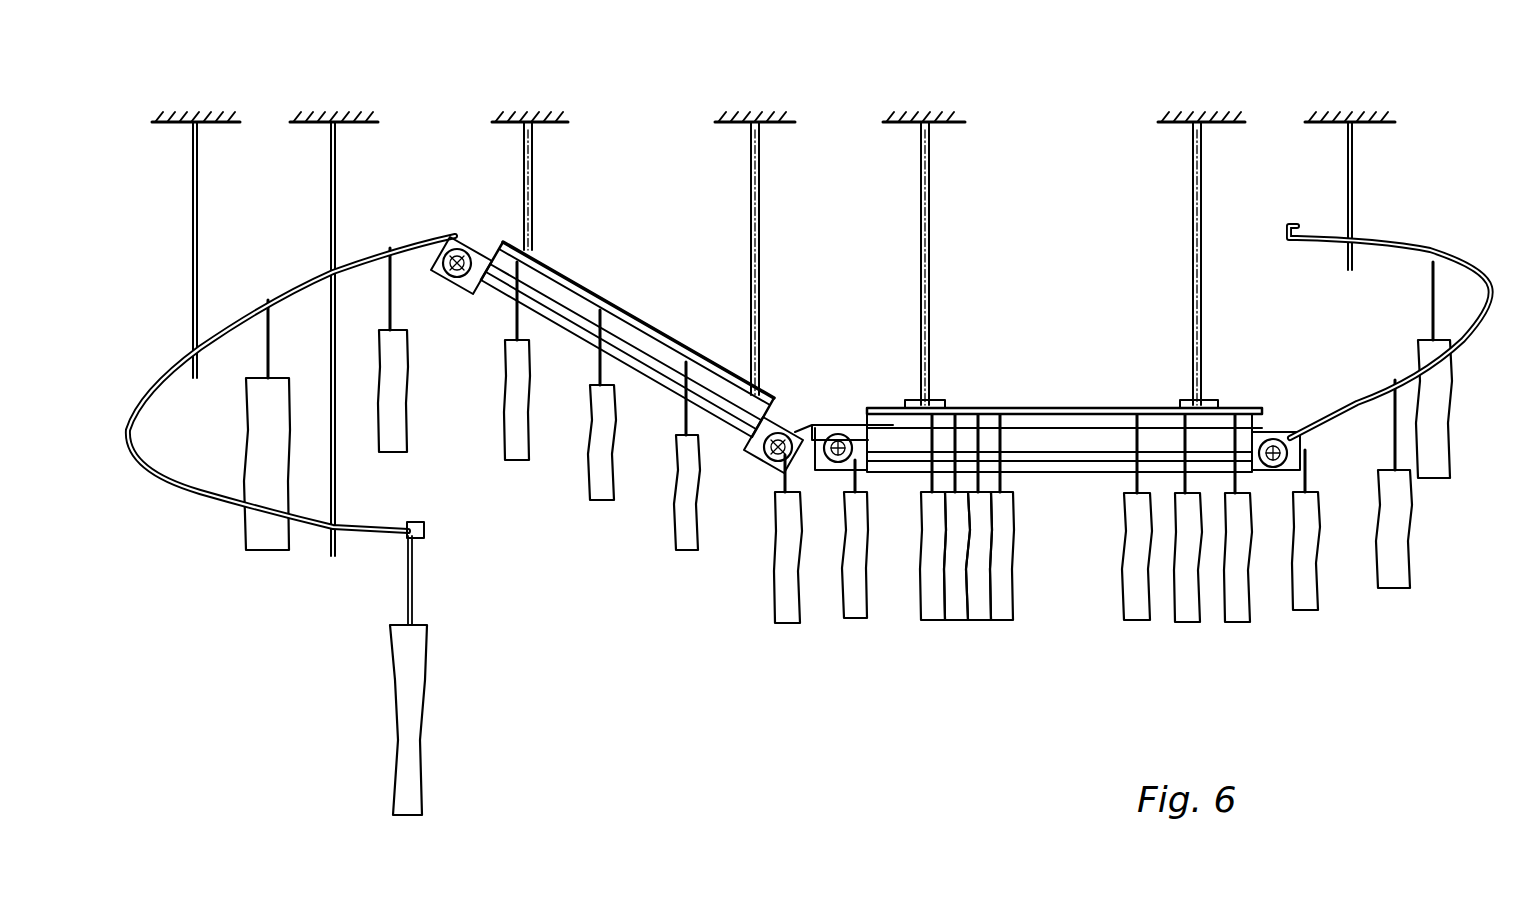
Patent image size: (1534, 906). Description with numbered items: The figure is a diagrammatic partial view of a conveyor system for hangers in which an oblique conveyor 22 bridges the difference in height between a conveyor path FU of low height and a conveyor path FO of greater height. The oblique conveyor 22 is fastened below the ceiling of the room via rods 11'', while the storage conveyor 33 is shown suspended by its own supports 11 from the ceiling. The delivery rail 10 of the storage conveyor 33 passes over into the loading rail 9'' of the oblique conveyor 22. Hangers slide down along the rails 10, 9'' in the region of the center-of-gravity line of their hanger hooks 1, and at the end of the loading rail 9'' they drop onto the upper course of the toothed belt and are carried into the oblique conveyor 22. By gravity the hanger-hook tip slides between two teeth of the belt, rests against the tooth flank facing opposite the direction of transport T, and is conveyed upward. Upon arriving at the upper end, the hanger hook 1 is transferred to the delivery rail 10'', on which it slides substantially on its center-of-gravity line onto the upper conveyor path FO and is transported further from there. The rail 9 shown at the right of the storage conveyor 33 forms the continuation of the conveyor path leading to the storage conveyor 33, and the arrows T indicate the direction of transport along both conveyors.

The hanger hook 1 is at (405, 580).
The return conveyor rail loop 9 is at (1390, 332).
The loading rail 9'' is at (778, 407).
The delivery rail 10 is at (841, 392).
The delivery rail 10'' is at (442, 225).
The suspension supports of horizontal conveyor 11 is at (1064, 258).
The rods 11'' is at (643, 253).
The oblique conveyor 22 is at (642, 418).
The storage conveyor 33 is at (1072, 503).
The conveyor path of greater height FO is at (132, 428).
The conveyor path of low height FU is at (818, 414).
The transport direction T is at (575, 257).